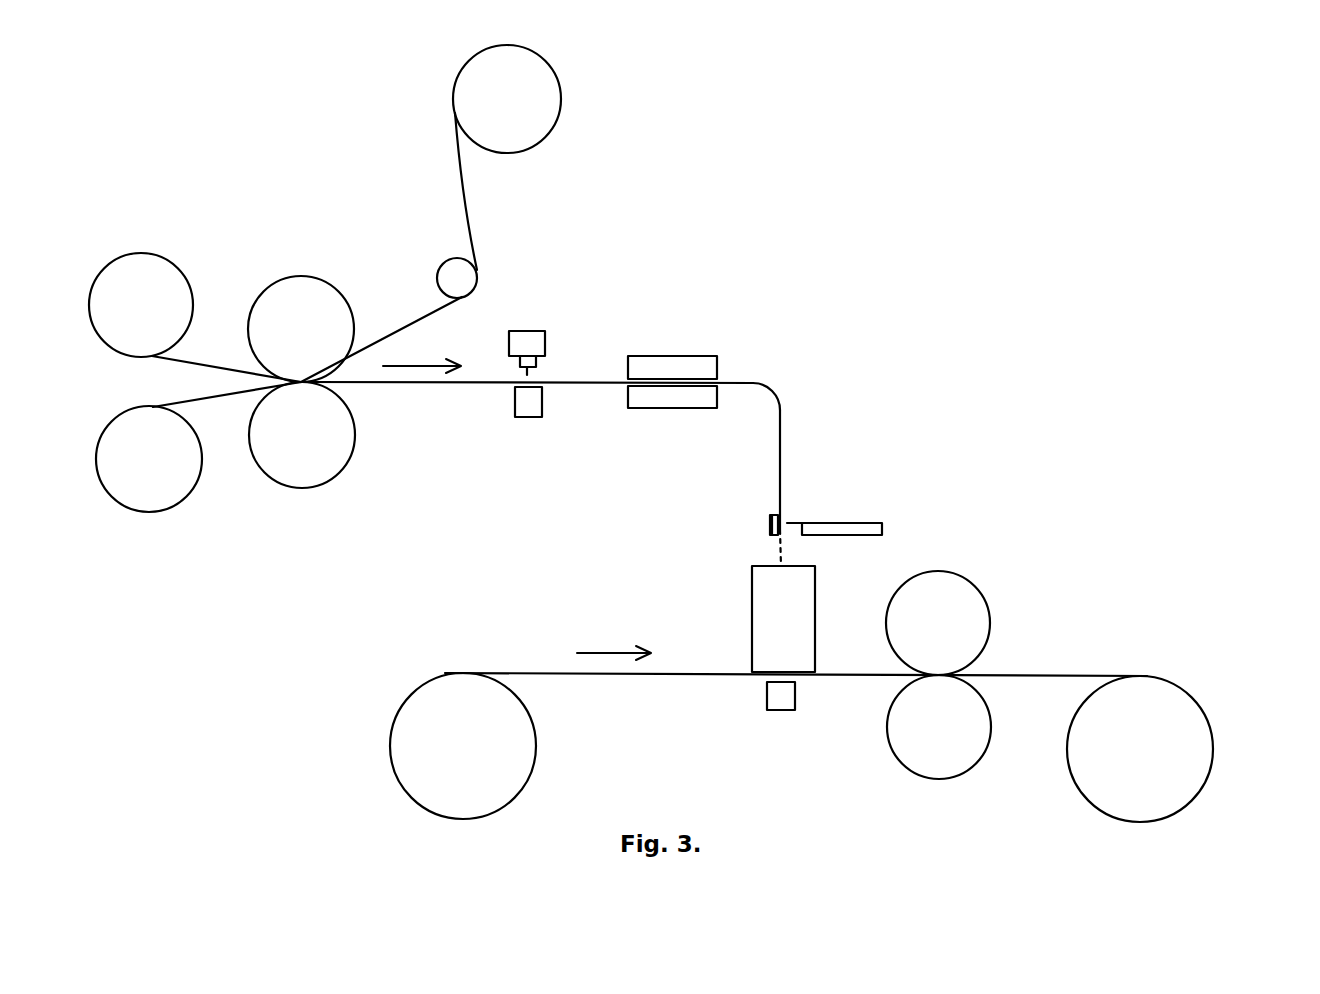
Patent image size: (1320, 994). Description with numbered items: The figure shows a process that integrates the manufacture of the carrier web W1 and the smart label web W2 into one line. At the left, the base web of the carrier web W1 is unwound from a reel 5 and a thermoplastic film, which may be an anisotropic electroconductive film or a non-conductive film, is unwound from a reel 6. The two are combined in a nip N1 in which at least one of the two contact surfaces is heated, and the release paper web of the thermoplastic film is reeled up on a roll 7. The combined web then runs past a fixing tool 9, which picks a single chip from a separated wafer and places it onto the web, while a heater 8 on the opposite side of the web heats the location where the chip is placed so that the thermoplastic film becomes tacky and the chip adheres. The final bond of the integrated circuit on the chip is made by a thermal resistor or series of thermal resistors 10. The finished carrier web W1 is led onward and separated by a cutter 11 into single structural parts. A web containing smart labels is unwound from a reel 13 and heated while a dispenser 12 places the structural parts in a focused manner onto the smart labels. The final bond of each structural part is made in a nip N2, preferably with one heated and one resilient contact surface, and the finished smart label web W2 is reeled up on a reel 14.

The reel 5 is at (150, 497).
The reel 6 is at (150, 263).
The roll 7 is at (512, 63).
The heater 8 is at (527, 407).
The fixing tool 9 is at (533, 320).
The thermal resistors 10 is at (685, 362).
The cutter 11 is at (838, 530).
The dispenser 12 is at (762, 600).
The reel 13 is at (398, 735).
The reel 14 is at (1150, 698).
The nip N1 is at (313, 383).
The nip N2 is at (957, 675).
The carrier web W1 is at (783, 450).
The smart label web W2 is at (1095, 677).